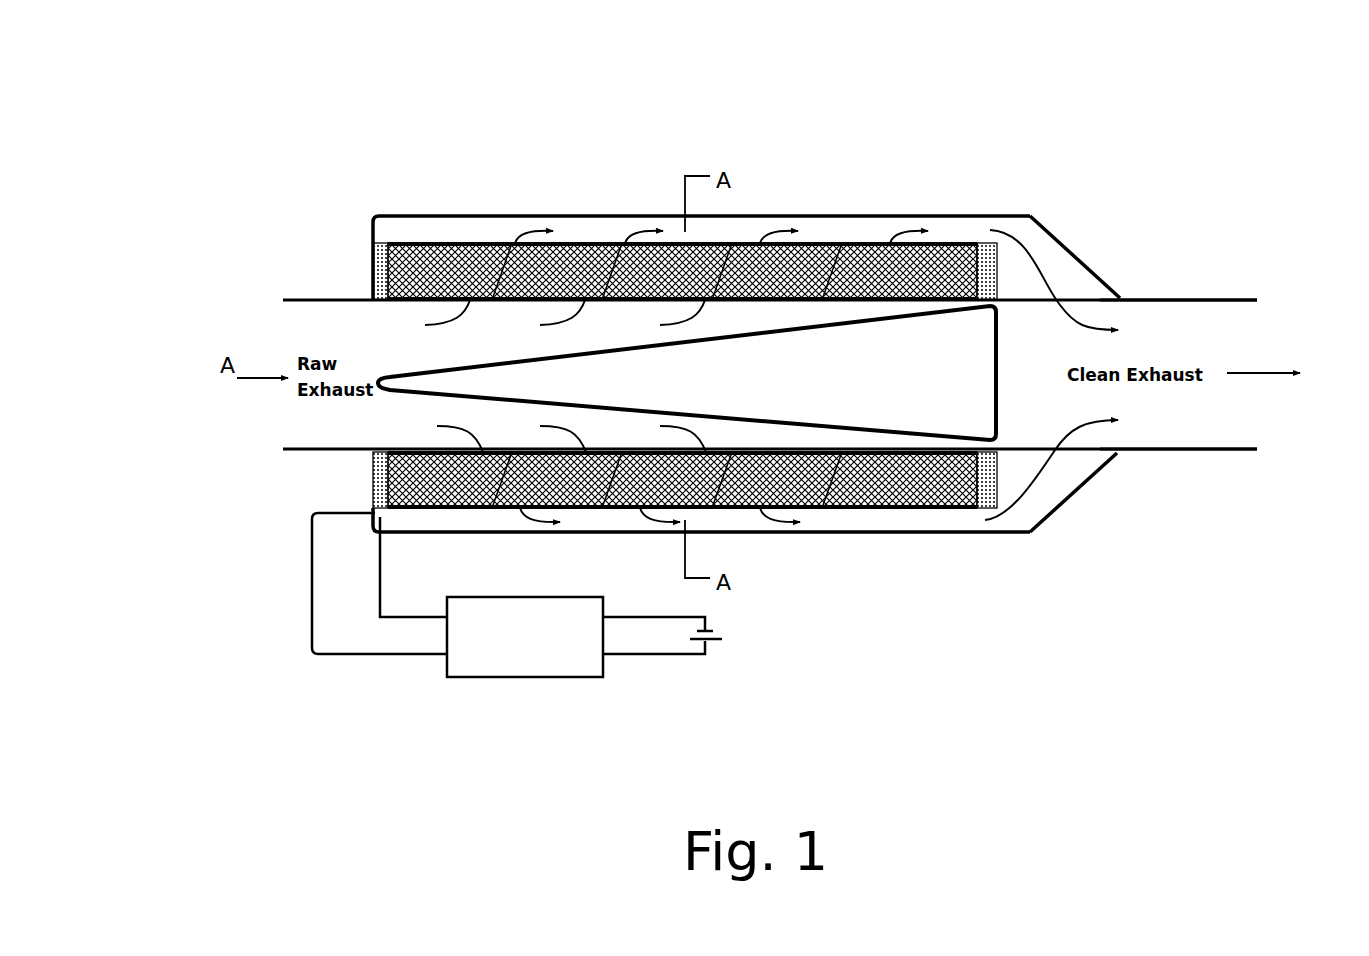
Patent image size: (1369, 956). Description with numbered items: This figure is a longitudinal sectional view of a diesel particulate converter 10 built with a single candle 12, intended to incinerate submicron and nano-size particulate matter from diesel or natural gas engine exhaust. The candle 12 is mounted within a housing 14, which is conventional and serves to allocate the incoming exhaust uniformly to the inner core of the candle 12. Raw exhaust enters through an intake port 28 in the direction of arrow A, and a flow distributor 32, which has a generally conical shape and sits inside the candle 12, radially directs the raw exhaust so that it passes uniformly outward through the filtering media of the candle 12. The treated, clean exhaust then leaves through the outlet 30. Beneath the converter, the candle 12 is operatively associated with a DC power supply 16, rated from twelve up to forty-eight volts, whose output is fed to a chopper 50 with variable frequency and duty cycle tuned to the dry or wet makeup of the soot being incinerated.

The particulate converter 10 is at (1087, 195).
The candle 12 is at (930, 243).
The housing 14 is at (462, 216).
The power supply 16 is at (724, 662).
The intake port 28 is at (286, 420).
The outlet 30 is at (1190, 340).
The flow distributor 32 is at (456, 361).
The chopper 50 is at (497, 678).